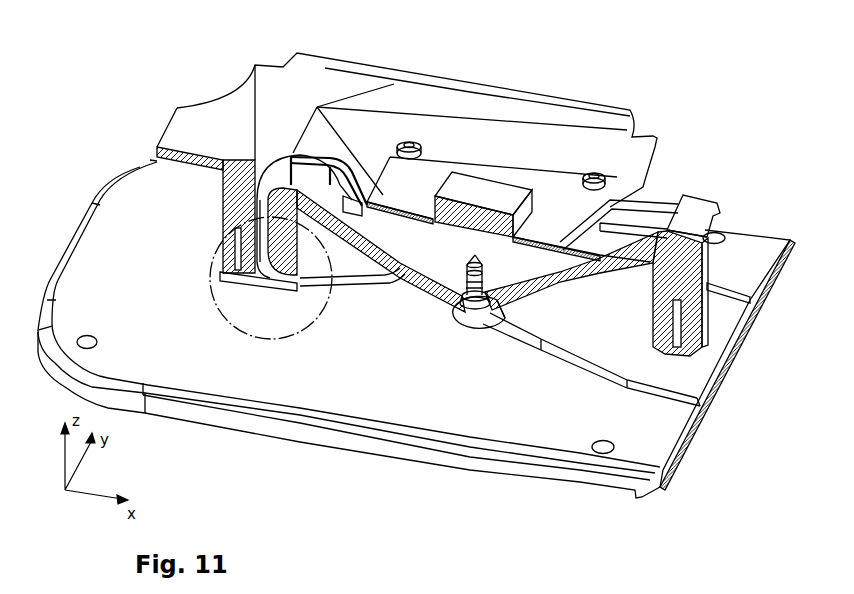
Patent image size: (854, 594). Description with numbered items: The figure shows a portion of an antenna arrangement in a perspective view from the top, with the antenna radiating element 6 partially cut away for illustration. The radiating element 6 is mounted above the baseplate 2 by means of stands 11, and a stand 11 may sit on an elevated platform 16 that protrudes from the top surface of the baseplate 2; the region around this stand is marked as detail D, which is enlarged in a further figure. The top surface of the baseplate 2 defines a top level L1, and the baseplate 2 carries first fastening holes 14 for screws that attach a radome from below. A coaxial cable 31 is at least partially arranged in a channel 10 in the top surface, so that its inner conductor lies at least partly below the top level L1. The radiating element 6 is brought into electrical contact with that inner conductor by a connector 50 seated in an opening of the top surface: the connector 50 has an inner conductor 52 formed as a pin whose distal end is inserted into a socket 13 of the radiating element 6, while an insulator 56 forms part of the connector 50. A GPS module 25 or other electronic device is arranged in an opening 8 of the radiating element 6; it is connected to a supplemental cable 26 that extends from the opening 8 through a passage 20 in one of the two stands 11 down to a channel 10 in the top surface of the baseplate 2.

The baseplate 2 is at (310, 430).
The antenna radiating element 6 is at (238, 128).
The opening 8 is at (472, 127).
The channel 10 is at (748, 325).
The stand 11 is at (222, 223).
The socket 13 is at (490, 305).
The first fastening hole 14 is at (605, 450).
The elevated platform 16 is at (262, 282).
The passage 20 is at (262, 177).
The GPS module 25 is at (486, 188).
The supplemental cable 26 is at (223, 187).
The coaxial cable 31 is at (490, 323).
The connector 50 is at (471, 327).
The inner conductor 52 is at (478, 254).
The insulator 56 is at (485, 320).
The top level L1 is at (157, 252).
The detail D is at (305, 332).